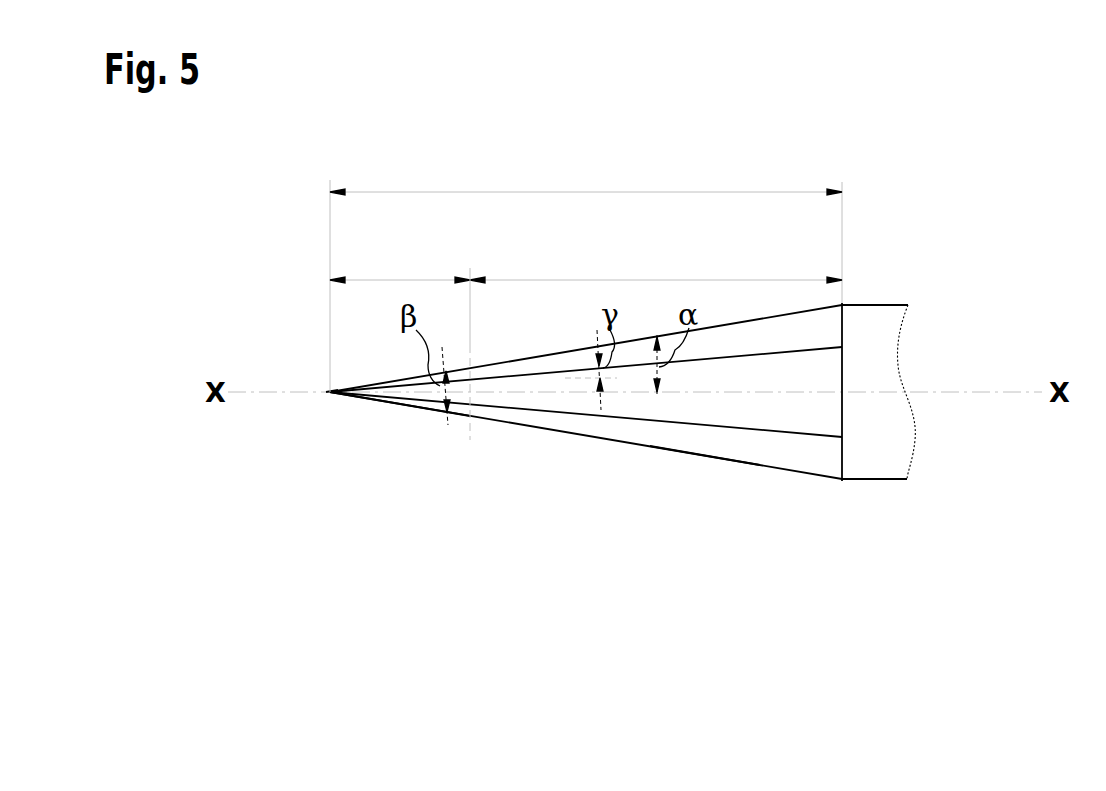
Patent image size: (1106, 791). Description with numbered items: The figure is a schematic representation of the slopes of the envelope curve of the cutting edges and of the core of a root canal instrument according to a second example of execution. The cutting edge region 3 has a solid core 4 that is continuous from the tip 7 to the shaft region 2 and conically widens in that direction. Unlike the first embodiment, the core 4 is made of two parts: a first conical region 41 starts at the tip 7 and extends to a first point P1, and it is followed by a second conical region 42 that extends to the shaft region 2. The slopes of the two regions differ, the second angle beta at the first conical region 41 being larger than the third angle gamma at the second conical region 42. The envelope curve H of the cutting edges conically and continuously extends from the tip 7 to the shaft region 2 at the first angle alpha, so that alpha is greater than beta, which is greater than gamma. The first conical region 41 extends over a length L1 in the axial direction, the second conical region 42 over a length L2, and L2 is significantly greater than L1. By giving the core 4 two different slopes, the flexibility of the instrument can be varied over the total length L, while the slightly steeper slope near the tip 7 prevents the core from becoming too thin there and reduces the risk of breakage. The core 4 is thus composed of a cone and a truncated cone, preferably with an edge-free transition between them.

The shaft region 2 is at (889, 289).
The cutting edge region 3 is at (566, 442).
The core 4 is at (525, 417).
The first conical region 41 is at (396, 401).
The second conical region 42 is at (650, 423).
The tip 7 is at (329, 392).
The first point P1 is at (470, 440).
The envelope curve H is at (707, 456).
The total length L is at (586, 275).
The length L1 is at (400, 265).
The length L2 is at (656, 265).